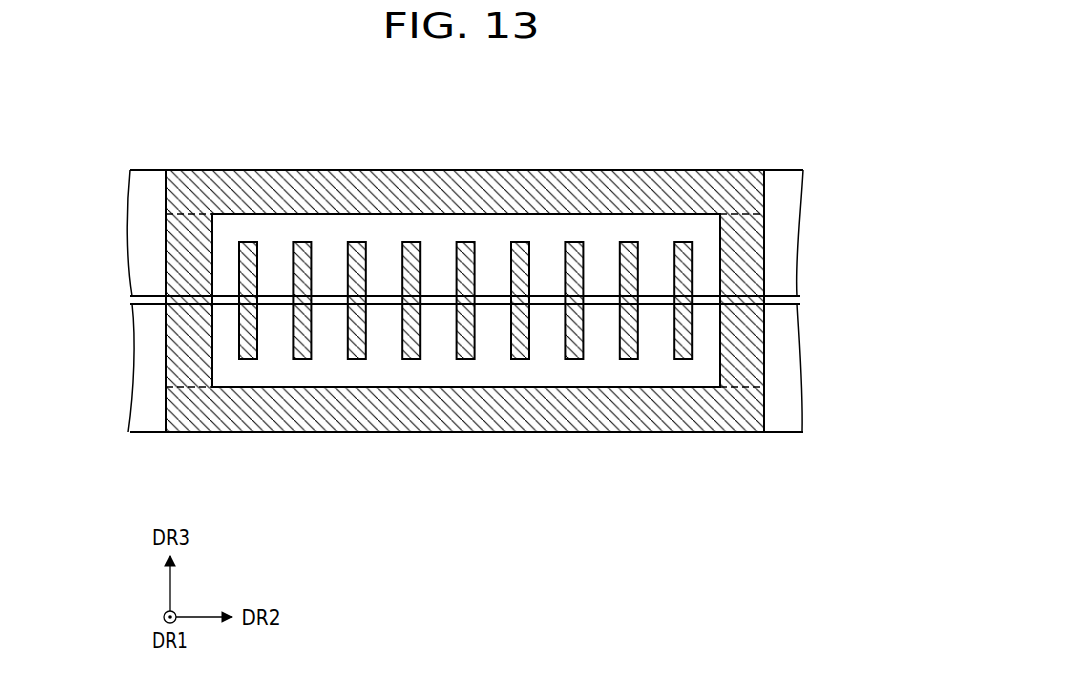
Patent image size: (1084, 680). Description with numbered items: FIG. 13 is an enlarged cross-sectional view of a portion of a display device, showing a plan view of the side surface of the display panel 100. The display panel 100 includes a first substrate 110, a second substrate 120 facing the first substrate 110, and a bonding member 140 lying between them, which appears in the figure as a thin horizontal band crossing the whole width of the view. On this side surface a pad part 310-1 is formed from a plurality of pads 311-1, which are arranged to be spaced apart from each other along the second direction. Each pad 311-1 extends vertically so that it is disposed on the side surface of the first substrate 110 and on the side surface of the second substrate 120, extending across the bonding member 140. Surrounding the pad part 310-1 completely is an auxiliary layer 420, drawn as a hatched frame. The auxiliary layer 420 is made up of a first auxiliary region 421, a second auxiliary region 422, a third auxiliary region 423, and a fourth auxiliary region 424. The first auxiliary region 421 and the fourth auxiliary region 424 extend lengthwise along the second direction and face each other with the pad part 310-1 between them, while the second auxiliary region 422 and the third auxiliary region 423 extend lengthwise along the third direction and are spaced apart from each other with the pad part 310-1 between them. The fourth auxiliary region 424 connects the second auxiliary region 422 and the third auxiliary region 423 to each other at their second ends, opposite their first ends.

The display panel 100 is at (536, 301).
The first substrate 110 is at (506, 368).
The second substrate 120 is at (790, 262).
The bonding member 140 is at (793, 300).
The pad part 310-1 is at (465, 383).
The pad 311-1 is at (720, 478).
The auxiliary layer 420 is at (472, 264).
The first auxiliary region 421 is at (463, 182).
The second auxiliary region 422 is at (172, 232).
The third auxiliary region 423 is at (757, 232).
The fourth auxiliary region 424 is at (752, 410).